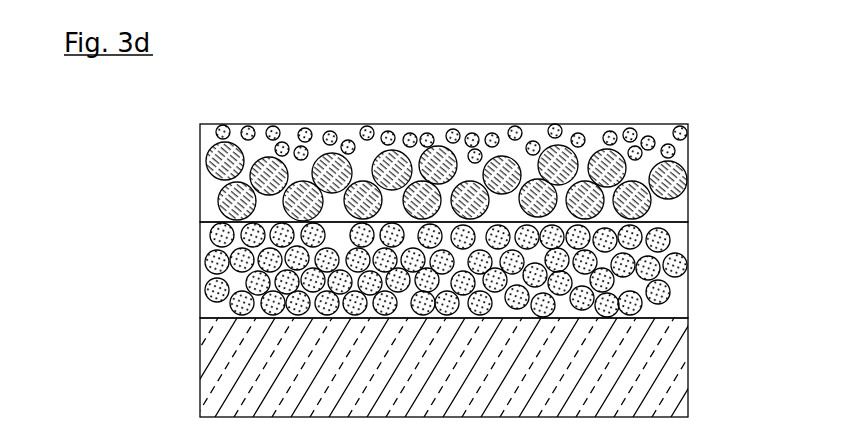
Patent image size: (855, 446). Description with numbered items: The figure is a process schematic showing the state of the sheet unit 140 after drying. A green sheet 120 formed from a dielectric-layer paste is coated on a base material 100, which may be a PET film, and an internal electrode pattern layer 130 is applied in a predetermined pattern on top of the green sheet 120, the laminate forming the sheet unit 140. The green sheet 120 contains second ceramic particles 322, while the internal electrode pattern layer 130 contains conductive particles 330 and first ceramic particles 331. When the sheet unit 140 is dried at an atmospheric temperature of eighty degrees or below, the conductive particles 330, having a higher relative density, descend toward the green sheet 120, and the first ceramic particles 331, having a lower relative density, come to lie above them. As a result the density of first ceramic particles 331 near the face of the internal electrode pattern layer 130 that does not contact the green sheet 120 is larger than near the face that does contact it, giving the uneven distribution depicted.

The base material 100 is at (180, 322).
The green sheet 120 is at (449, 270).
The internal electrode pattern layer 130 is at (445, 171).
The sheet unit 140 is at (416, 219).
The second ceramic particle 322 is at (688, 258).
The conductive particle 330 is at (688, 176).
The first ceramic particle 331 is at (688, 143).